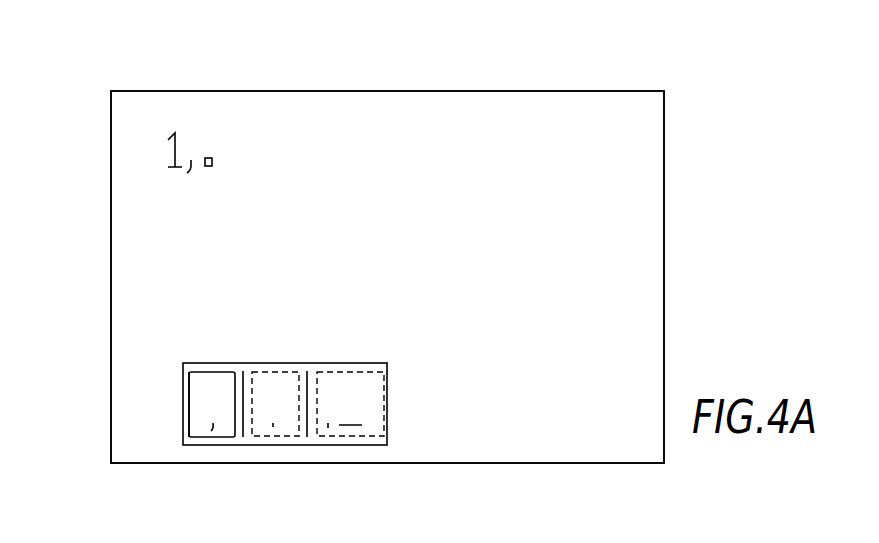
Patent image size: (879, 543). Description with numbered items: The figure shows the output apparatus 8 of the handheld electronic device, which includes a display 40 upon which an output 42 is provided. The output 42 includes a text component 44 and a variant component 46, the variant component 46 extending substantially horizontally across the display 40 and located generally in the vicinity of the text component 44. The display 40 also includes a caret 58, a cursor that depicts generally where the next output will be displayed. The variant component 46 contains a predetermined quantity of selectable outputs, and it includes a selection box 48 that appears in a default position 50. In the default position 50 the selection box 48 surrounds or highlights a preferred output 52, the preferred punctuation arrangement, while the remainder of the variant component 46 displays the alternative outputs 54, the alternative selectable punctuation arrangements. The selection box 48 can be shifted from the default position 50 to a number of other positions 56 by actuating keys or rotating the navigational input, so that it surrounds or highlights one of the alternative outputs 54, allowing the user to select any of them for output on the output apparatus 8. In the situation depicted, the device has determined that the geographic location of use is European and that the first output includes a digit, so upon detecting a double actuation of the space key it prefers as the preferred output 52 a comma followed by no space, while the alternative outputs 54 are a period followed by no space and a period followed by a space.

The output apparatus 8 is at (82, 108).
The display 40 is at (648, 132).
The output 42 is at (208, 128).
The text component 44 is at (203, 188).
The caret 58 is at (260, 141).
The variant component 46 is at (384, 363).
The selection box 48 is at (215, 372).
The default position 50 is at (196, 372).
The preferred output 52 is at (203, 426).
The alternative outputs 54 is at (282, 444).
The other positions 56 is at (288, 363).